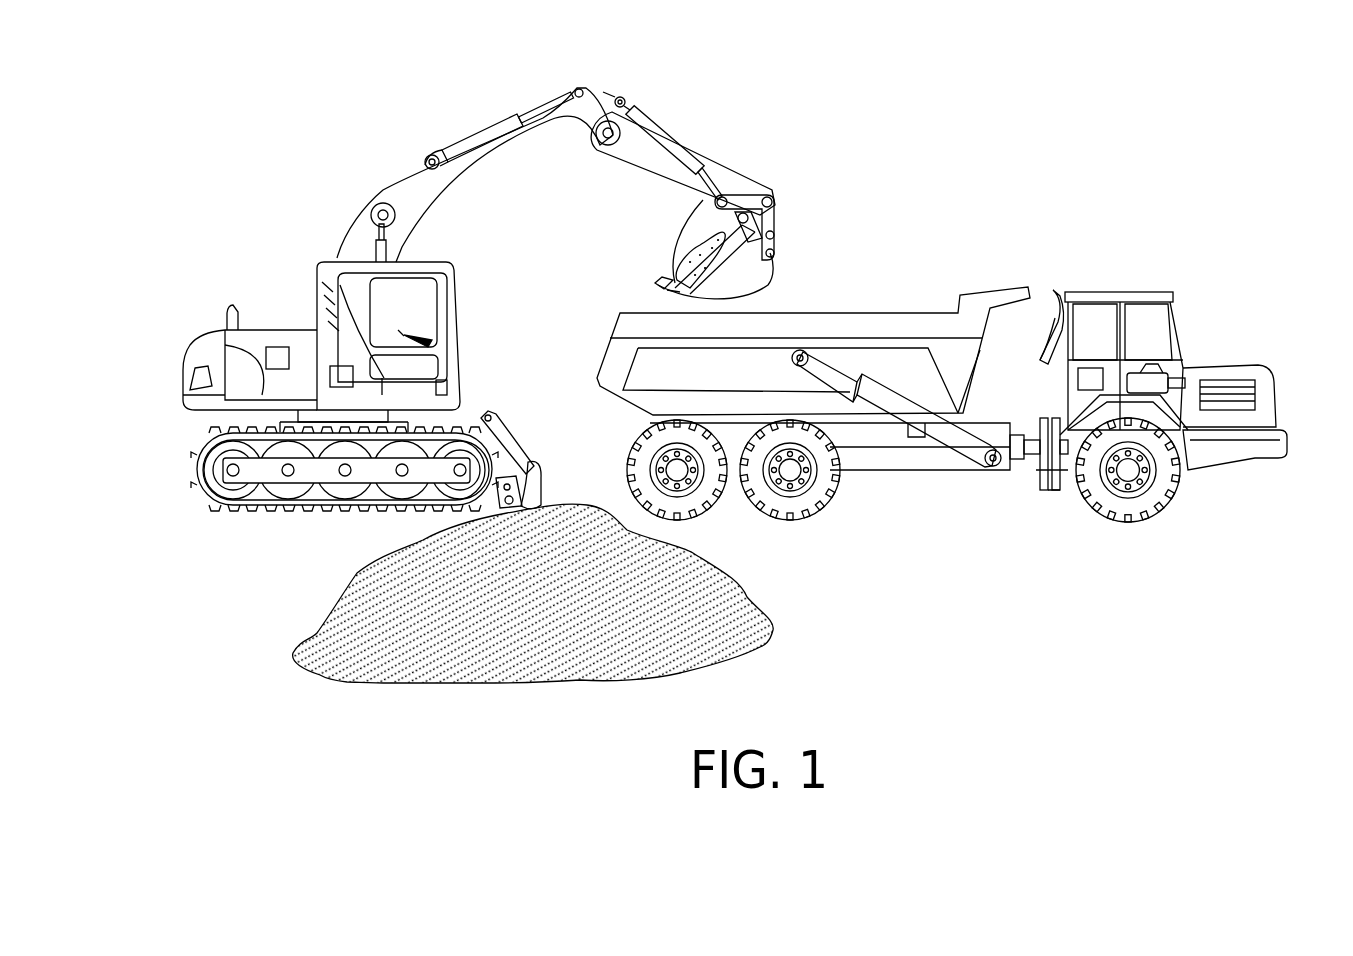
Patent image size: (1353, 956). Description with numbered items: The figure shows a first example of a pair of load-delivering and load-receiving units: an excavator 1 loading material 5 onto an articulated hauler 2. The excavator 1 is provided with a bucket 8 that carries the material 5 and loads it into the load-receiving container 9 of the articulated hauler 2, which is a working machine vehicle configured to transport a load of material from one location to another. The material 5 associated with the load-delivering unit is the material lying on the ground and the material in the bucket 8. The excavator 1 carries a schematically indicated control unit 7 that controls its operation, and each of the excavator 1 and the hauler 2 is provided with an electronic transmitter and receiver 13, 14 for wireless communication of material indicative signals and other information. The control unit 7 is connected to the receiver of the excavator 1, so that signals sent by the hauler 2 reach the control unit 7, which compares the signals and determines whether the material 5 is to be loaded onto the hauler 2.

The excavator 1 is at (205, 226).
The articulated hauler 2 is at (1136, 226).
The material 5 is at (690, 252).
The control unit 7 is at (327, 376).
The bucket 8 is at (747, 275).
The load-receiving container 9 is at (905, 330).
The electronic transmitter and receiver 13 is at (277, 346).
The electronic transmitter and receiver 14 is at (1092, 366).